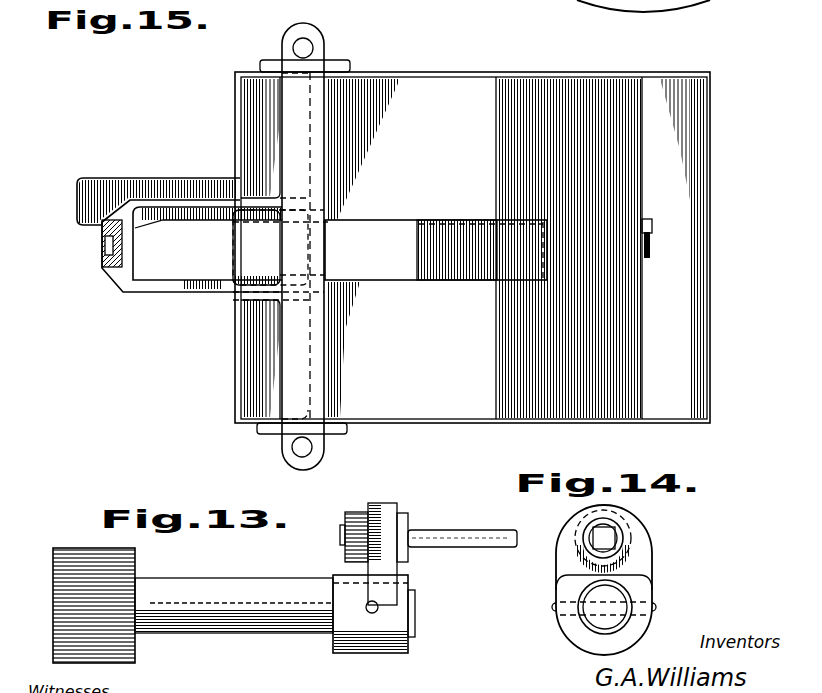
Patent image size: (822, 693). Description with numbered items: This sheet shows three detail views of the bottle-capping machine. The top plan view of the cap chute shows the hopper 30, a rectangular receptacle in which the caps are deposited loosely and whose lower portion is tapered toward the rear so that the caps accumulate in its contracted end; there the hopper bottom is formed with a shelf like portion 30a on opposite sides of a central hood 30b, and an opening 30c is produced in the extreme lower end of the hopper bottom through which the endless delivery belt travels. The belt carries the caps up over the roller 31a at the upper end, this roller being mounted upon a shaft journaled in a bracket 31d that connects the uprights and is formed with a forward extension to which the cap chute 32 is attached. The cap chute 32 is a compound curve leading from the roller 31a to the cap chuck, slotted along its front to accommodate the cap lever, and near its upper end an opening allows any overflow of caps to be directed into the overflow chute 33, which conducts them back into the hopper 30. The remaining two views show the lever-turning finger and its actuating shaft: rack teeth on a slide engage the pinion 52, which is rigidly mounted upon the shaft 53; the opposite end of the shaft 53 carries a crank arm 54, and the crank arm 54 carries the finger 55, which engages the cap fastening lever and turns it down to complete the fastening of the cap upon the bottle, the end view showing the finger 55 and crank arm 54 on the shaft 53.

In FIG. 15, the hopper 30 is at (472, 247).
In FIG. 15, the shelf like portion 30a is at (474, 248).
In FIG. 15, the central hood 30b is at (413, 248).
In FIG. 15, the opening 30c is at (656, 232).
In FIG. 15, the roller 31a is at (150, 293).
In FIG. 15, the bracket 31d is at (300, 317).
In FIG. 15, the cap chute 32 is at (108, 245).
In FIG. 15, the overflow chute 33 is at (117, 180).
In FIG. 13, the pinion 52 is at (66, 545).
In FIG. 13, the shaft 53 is at (238, 592).
In FIG. 14, the shaft 53 is at (600, 613).
In FIG. 13, the crank arm 54 is at (388, 595).
In FIG. 14, the crank arm 54 is at (637, 568).
In FIG. 13, the finger 55 is at (456, 535).
In FIG. 14, the finger 55 is at (607, 538).